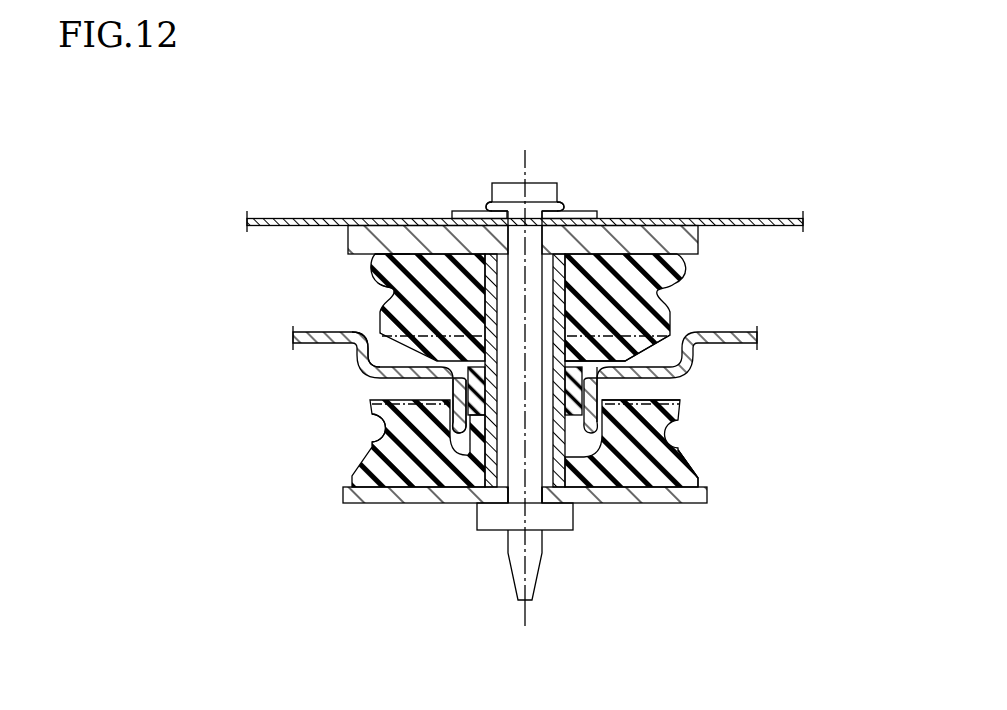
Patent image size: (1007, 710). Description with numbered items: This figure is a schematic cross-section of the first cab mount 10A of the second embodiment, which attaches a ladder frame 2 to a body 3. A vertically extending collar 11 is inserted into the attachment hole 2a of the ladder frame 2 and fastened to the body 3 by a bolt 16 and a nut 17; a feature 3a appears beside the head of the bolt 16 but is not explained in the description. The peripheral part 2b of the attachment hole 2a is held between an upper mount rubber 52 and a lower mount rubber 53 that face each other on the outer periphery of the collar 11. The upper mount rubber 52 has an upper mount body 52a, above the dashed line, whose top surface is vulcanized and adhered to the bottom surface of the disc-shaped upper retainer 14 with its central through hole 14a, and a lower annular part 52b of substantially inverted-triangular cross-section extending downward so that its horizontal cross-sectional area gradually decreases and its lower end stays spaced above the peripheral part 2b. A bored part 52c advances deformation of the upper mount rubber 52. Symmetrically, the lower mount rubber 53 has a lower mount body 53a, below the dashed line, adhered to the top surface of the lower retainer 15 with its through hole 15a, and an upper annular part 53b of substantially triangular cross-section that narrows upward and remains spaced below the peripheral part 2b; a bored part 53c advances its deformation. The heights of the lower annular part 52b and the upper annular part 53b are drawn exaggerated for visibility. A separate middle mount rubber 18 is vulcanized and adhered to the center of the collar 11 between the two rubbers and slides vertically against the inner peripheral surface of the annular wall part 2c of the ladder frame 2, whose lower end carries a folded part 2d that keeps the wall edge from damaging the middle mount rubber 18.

The ladder frame 2 is at (318, 333).
The attachment hole 2a is at (570, 334).
The peripheral part 2b is at (370, 355).
The annular wall part 2c is at (460, 388).
The folded part 2d is at (450, 434).
The body 3 is at (767, 217).
The bolt head flange 3a is at (529, 217).
The first cab mount 10A is at (709, 456).
The collar 11 is at (566, 317).
The upper retainer 14 is at (398, 232).
The through hole 14a is at (548, 240).
The lower retainer 15 is at (647, 494).
The through hole 15a is at (550, 493).
The bolt 16 is at (513, 194).
The nut 17 is at (492, 523).
The middle mount rubber 18 is at (470, 413).
The upper mount rubber 52 is at (434, 268).
The upper mount body 52a is at (388, 266).
The lower annular part 52b is at (606, 362).
The bored part 52c is at (393, 293).
The lower mount rubber 53 is at (404, 470).
The lower mount body 53a is at (680, 468).
The upper annular part 53b is at (606, 400).
The bored part 53c is at (380, 430).